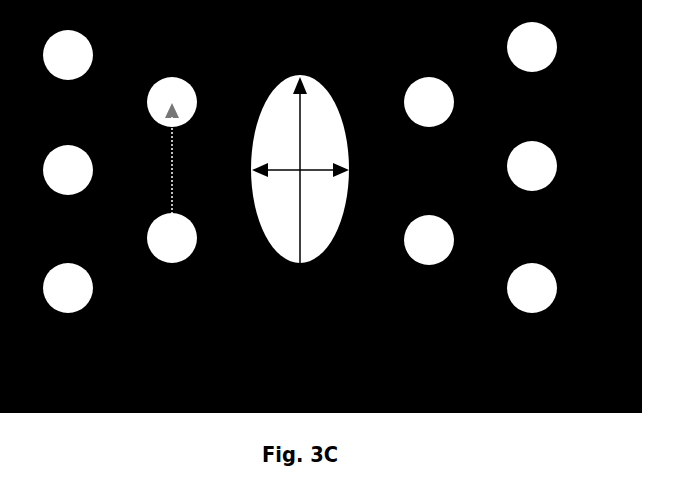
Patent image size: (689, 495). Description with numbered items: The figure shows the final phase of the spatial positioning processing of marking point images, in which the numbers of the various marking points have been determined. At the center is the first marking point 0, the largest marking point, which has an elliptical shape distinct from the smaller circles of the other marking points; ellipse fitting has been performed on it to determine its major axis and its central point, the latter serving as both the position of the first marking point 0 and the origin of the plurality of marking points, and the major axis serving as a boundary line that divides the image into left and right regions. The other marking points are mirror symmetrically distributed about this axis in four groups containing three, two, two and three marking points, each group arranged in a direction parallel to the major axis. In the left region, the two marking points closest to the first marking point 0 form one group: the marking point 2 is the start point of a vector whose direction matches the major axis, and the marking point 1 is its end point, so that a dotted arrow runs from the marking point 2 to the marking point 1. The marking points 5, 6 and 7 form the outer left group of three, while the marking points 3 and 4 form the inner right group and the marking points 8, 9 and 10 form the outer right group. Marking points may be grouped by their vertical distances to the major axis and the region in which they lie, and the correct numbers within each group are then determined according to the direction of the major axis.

The first marking point 0 is at (300, 191).
The marking point 1 is at (177, 114).
The marking point 2 is at (172, 212).
The marking point 3 is at (429, 130).
The marking point 4 is at (429, 261).
The marking point 5 is at (68, 77).
The marking point 6 is at (68, 193).
The marking point 7 is at (68, 309).
The marking point 8 is at (532, 72).
The marking point 9 is at (532, 191).
The marking point 10 is at (532, 309).